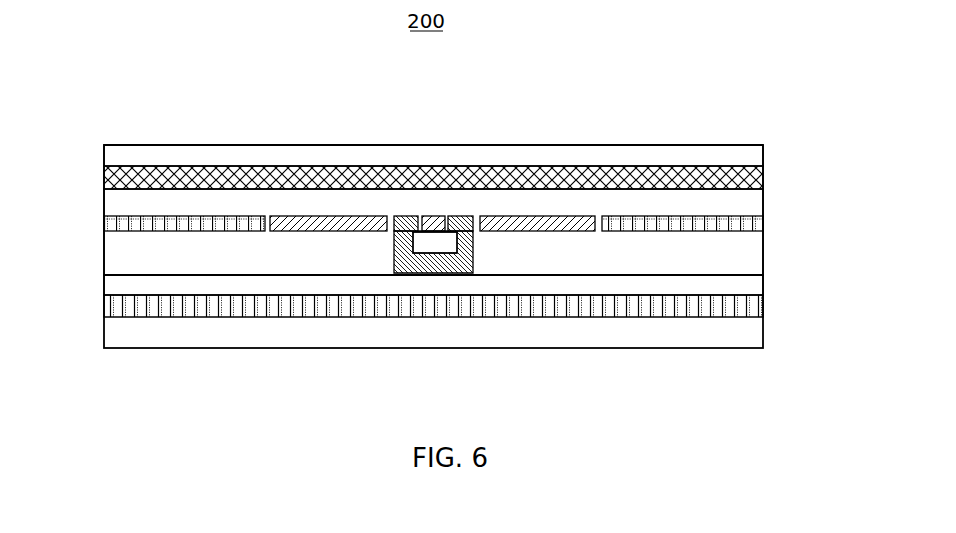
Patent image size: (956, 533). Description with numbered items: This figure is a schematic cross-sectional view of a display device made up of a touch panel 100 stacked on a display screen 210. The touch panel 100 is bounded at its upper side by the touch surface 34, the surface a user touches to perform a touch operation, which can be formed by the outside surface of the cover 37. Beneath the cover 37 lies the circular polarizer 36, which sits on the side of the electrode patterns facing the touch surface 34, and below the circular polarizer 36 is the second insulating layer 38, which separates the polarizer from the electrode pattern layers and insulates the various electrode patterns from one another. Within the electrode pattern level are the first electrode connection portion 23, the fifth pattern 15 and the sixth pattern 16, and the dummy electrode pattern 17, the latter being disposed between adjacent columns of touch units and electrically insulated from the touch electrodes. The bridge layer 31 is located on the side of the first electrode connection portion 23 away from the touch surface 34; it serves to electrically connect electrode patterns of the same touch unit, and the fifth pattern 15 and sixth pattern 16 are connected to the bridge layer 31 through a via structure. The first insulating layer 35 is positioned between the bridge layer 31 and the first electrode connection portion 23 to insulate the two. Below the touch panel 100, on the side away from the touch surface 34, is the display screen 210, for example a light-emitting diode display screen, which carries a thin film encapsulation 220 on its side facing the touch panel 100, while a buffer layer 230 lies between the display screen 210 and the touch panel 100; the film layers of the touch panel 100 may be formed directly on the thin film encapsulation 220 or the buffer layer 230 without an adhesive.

The touch panel 100 is at (97, 275).
The touch surface 34 is at (600, 146).
The cover 37 is at (748, 156).
The circular polarizer 36 is at (752, 180).
The second insulating layer 38 is at (748, 205).
The dummy electrode pattern 17 is at (750, 219).
The fifth pattern 15 is at (403, 216).
The first electrode connection portion 23 is at (438, 216).
The sixth pattern 16 is at (470, 216).
The bridge layer 31 is at (470, 265).
The first insulating layer 35 is at (435, 247).
The display screen 210 is at (98, 295).
The buffer layer 230 is at (220, 282).
The thin film encapsulation 220 is at (292, 300).